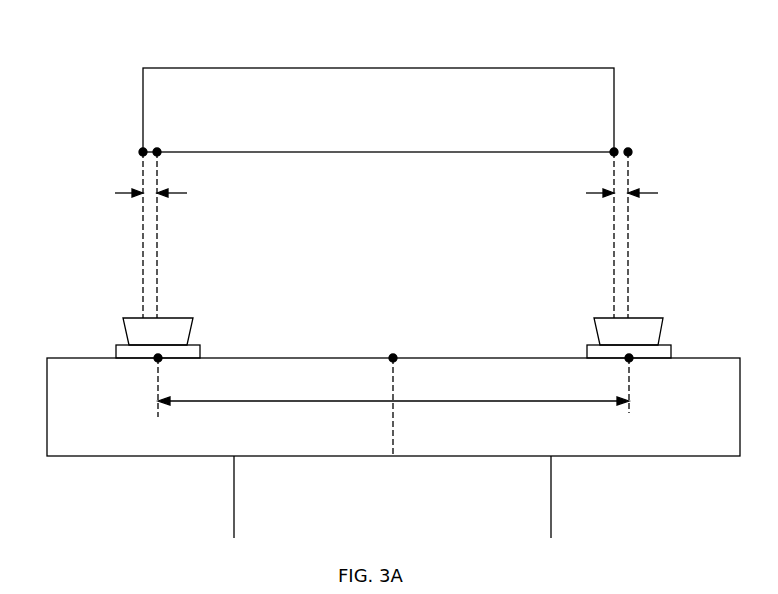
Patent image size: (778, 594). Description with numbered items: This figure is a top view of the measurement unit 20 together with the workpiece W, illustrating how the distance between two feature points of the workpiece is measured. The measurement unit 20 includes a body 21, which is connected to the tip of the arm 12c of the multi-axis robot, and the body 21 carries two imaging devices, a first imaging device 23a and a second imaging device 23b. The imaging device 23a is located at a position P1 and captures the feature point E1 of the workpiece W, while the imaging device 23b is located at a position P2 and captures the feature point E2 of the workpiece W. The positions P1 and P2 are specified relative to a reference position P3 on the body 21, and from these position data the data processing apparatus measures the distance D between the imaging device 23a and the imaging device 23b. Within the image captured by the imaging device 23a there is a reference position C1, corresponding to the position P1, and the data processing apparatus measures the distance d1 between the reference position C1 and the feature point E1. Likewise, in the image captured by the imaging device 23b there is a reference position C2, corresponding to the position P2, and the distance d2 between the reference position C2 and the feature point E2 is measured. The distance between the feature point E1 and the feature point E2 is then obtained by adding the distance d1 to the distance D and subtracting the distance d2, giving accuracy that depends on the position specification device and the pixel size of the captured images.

The workpiece W is at (614, 68).
The feature point E1 is at (144, 151).
The reference position C1 is at (159, 150).
The feature point E2 is at (615, 151).
The reference position C2 is at (630, 150).
The distance d1 is at (161, 208).
The distance d2 is at (632, 208).
The measurement unit 20 is at (72, 306).
The body 21 is at (712, 358).
The imaging device 23a is at (170, 318).
The imaging device 23b is at (641, 318).
The position P1 is at (156, 362).
The position P2 is at (631, 362).
The reference position P3 is at (395, 356).
The distance D is at (393, 391).
The arm 12c is at (551, 503).